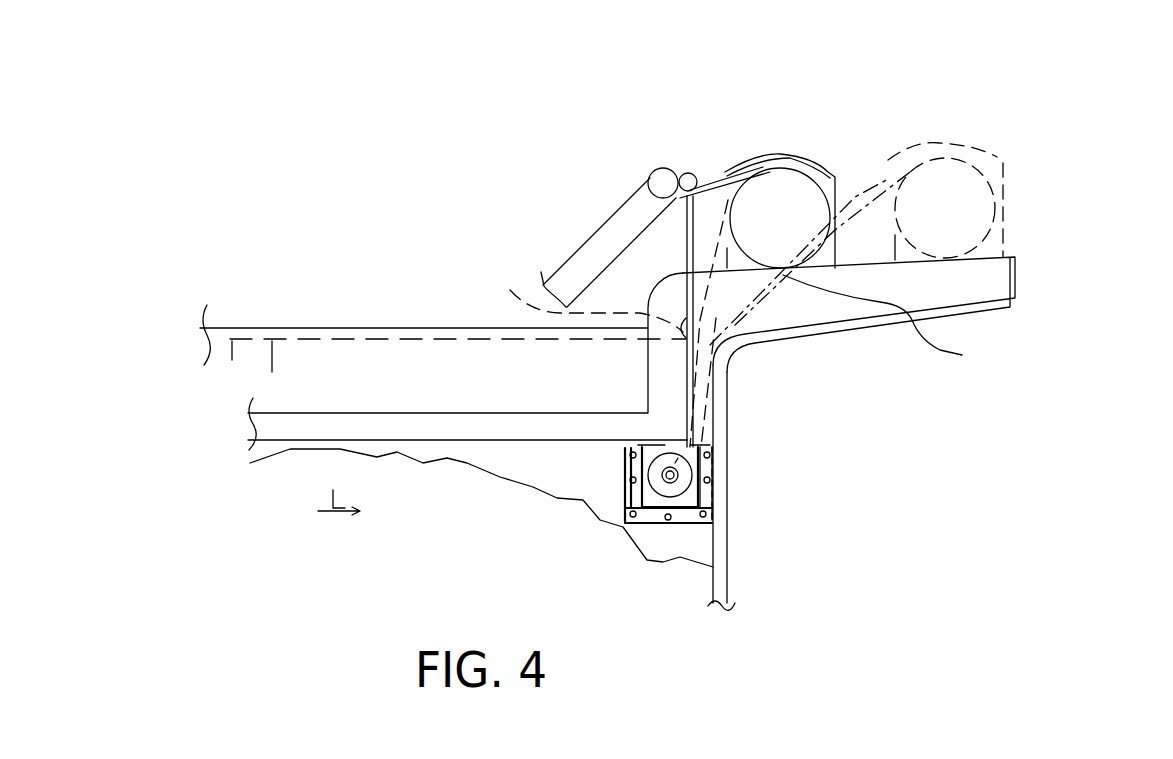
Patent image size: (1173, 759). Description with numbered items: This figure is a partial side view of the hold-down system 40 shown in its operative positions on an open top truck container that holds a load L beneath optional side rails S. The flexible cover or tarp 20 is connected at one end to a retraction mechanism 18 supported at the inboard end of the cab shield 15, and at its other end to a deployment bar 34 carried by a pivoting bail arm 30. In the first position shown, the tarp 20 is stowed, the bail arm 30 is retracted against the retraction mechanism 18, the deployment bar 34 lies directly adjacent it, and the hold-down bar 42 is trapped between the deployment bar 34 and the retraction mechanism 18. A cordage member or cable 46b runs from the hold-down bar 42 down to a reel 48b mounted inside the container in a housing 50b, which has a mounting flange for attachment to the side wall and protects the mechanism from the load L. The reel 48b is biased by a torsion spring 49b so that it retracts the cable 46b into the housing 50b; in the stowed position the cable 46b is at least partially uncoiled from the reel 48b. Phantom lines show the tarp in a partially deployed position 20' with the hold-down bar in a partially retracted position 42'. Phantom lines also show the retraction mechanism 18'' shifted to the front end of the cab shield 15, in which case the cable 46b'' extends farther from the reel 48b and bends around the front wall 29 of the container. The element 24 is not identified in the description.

The side rails S is at (270, 325).
The cab shield 15 is at (808, 303).
The retraction mechanism 18 is at (794, 170).
The retraction mechanism (shifted position) 18'' is at (870, 196).
The flexible cover (tarp) 20 is at (757, 252).
The partially deployed tarp position 20' is at (458, 276).
The guide block 24 is at (440, 422).
The front wall 29 is at (723, 578).
The bail arm 30 is at (605, 220).
The deployment bar 34 is at (671, 168).
The hold-down system 40 is at (662, 528).
The hold-down member (bar) 42 is at (701, 106).
The hold-down bar (partially retracted position) 42' is at (564, 283).
The second cordage member (cable) 46b is at (766, 321).
The cable (extended position) 46b'' is at (907, 327).
The reel 48b is at (683, 485).
The torsion spring 49b is at (650, 515).
The housing 50b is at (688, 522).